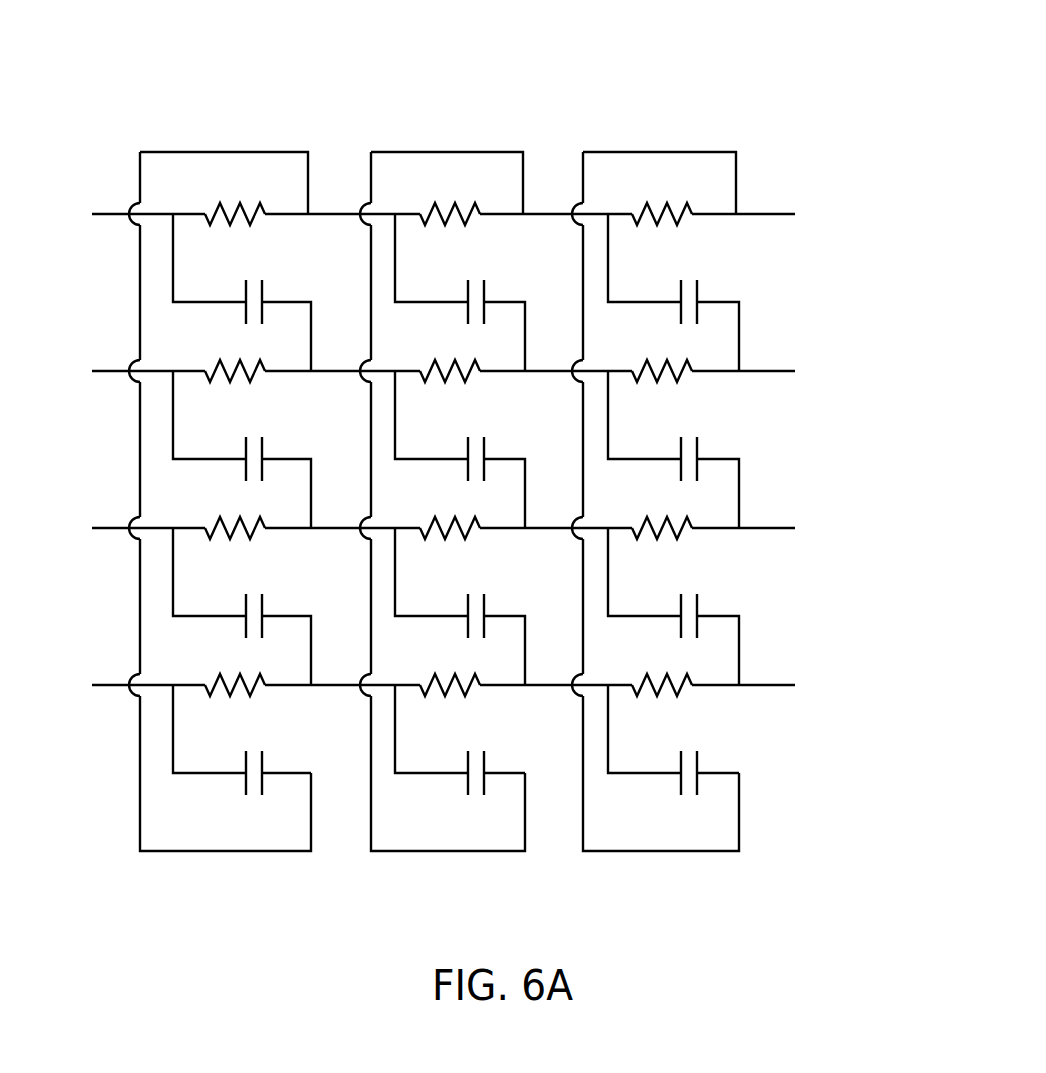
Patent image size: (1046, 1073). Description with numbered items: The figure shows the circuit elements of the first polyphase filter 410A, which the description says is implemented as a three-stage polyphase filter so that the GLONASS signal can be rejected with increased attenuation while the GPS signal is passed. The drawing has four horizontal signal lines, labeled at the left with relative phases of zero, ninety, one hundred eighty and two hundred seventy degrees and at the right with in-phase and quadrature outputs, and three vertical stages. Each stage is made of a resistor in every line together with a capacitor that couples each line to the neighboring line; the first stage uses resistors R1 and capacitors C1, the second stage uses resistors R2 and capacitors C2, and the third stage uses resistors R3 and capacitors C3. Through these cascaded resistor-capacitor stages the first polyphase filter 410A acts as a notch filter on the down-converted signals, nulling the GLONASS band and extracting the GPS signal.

The first polyphase filter 410A is at (729, 98).
The first-stage resistor R1 is at (235, 434).
The second-stage resistor R2 is at (450, 434).
The third-stage resistor R3 is at (662, 434).
The first-stage capacitor C1 is at (264, 519).
The second-stage capacitor C2 is at (482, 519).
The third-stage capacitor C3 is at (695, 524).